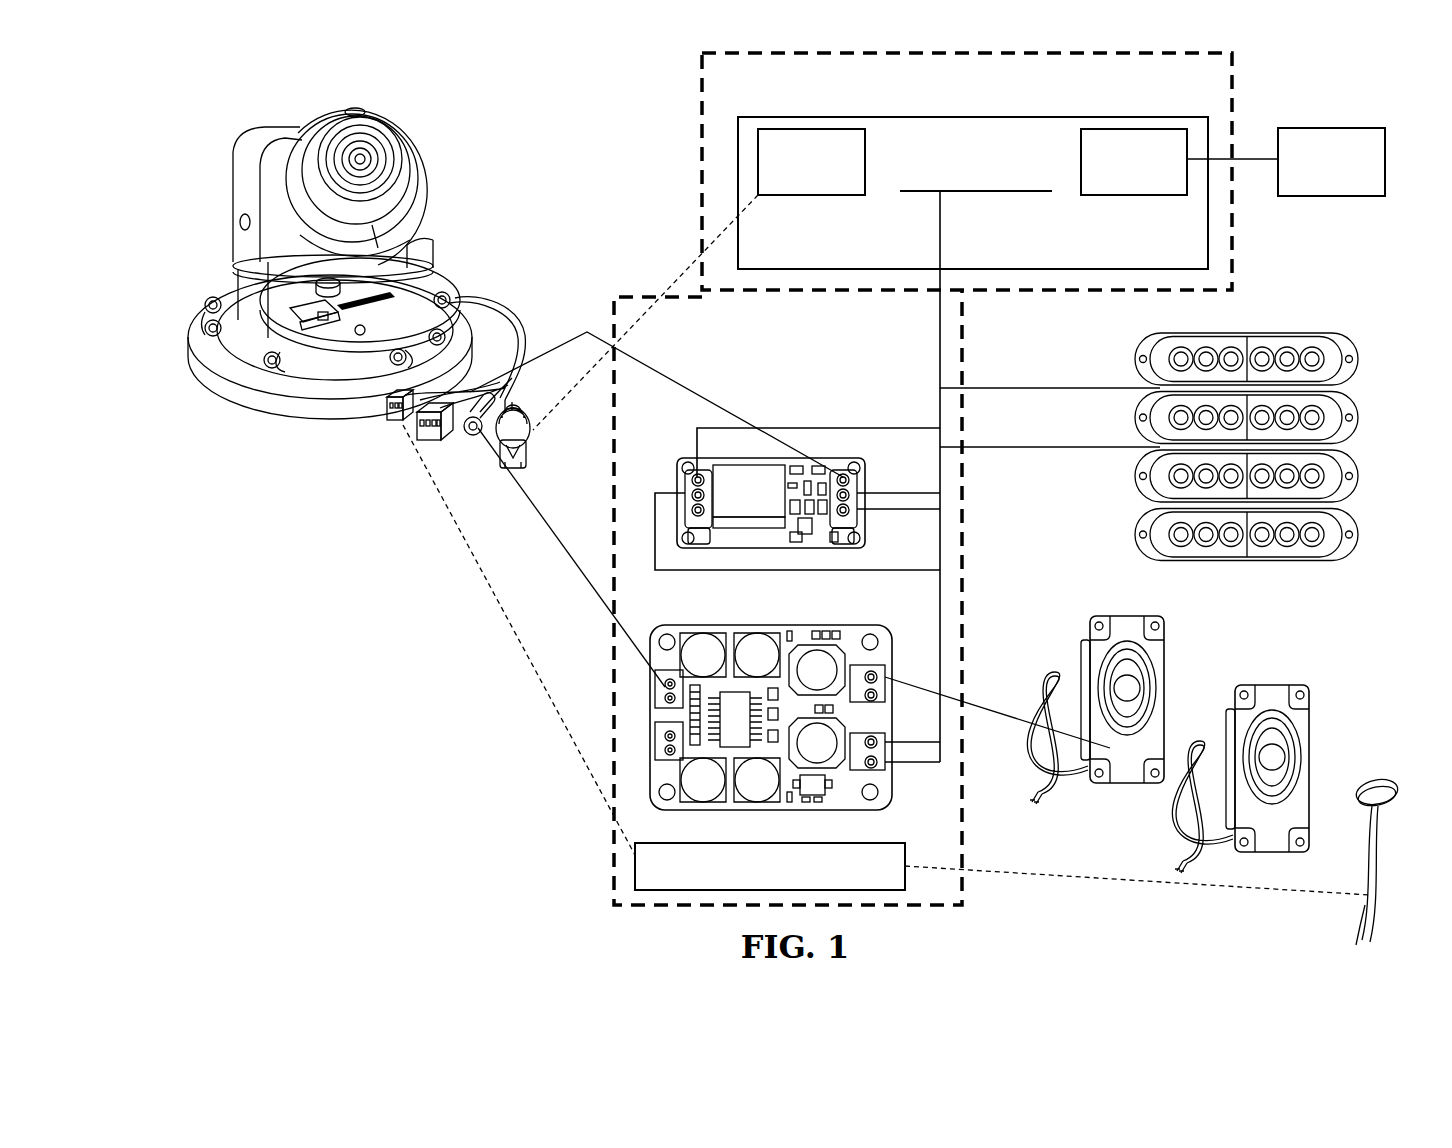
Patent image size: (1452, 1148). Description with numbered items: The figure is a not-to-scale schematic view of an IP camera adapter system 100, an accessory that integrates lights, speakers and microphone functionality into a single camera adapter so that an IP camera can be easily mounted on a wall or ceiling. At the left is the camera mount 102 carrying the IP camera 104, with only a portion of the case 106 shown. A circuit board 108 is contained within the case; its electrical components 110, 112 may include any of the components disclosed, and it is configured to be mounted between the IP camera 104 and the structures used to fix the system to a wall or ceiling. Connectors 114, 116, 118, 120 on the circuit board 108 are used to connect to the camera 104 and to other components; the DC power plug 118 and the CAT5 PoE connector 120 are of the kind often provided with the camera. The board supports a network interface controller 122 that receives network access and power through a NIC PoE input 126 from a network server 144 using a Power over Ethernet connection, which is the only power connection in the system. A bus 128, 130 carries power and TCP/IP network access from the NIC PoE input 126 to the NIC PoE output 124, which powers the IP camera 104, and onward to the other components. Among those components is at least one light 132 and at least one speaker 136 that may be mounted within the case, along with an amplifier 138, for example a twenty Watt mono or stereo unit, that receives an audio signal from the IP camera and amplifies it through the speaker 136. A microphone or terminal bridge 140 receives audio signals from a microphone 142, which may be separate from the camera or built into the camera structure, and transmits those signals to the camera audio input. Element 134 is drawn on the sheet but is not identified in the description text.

The IP camera adapter system 100 is at (174, 142).
The camera mount 102 is at (482, 192).
The IP camera 104 is at (420, 158).
The case 106 is at (340, 410).
The circuit board 108 is at (456, 290).
The electrical component 110 is at (278, 332).
The electrical component 112 is at (315, 325).
The connector 114 is at (398, 418).
The connector 116 is at (430, 442).
The DC power plug 118 is at (472, 437).
The CAT5 PoE connector 120 is at (527, 458).
The network interface controller 122 is at (775, 108).
The NIC PoE output 124 is at (802, 129).
The NIC PoE input 126 is at (1130, 129).
The bus 128 is at (920, 192).
The bus 130 is at (942, 340).
The light 132 is at (1258, 333).
The relay board 134 is at (677, 483).
The speaker 136 is at (1164, 656).
The amplifier 138 is at (833, 625).
The terminal bridge 140 is at (635, 866).
The microphone 142 is at (1375, 780).
The network server 144 is at (1338, 128).